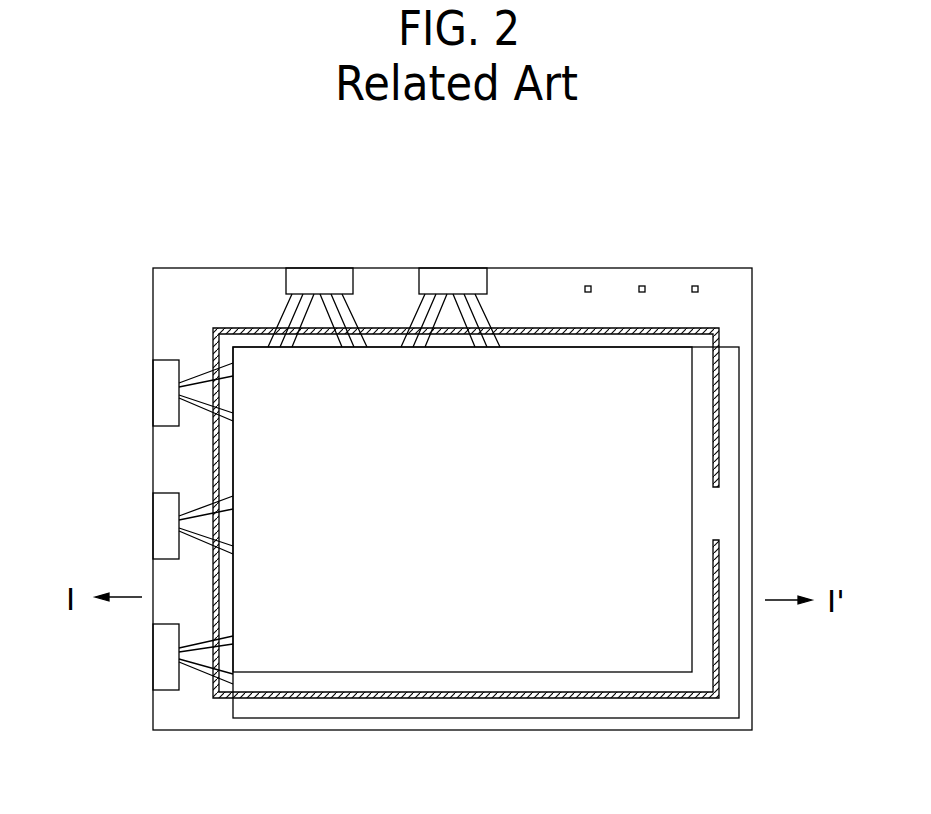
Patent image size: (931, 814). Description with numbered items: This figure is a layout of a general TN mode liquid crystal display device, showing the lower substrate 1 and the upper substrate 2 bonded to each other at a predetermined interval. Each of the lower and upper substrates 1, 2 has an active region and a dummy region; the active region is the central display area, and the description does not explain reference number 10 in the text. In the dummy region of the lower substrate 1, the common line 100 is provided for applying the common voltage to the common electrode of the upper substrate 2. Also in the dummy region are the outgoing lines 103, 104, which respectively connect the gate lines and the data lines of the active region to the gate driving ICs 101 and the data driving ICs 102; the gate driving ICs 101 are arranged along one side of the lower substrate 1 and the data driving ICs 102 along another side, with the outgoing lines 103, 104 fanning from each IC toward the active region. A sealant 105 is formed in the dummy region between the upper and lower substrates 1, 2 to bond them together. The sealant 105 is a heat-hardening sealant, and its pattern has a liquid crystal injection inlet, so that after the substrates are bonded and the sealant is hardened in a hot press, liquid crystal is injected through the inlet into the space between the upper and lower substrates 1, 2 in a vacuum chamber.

The lower substrate 1 is at (752, 303).
The upper substrate 2 is at (667, 328).
The display region 10 is at (670, 517).
The common line 100 is at (667, 705).
The gate driving IC 101 is at (162, 399).
The data driving IC 102 is at (320, 275).
The outgoing line 103 is at (207, 370).
The outgoing line 104 is at (490, 308).
The sealant 105 is at (717, 675).